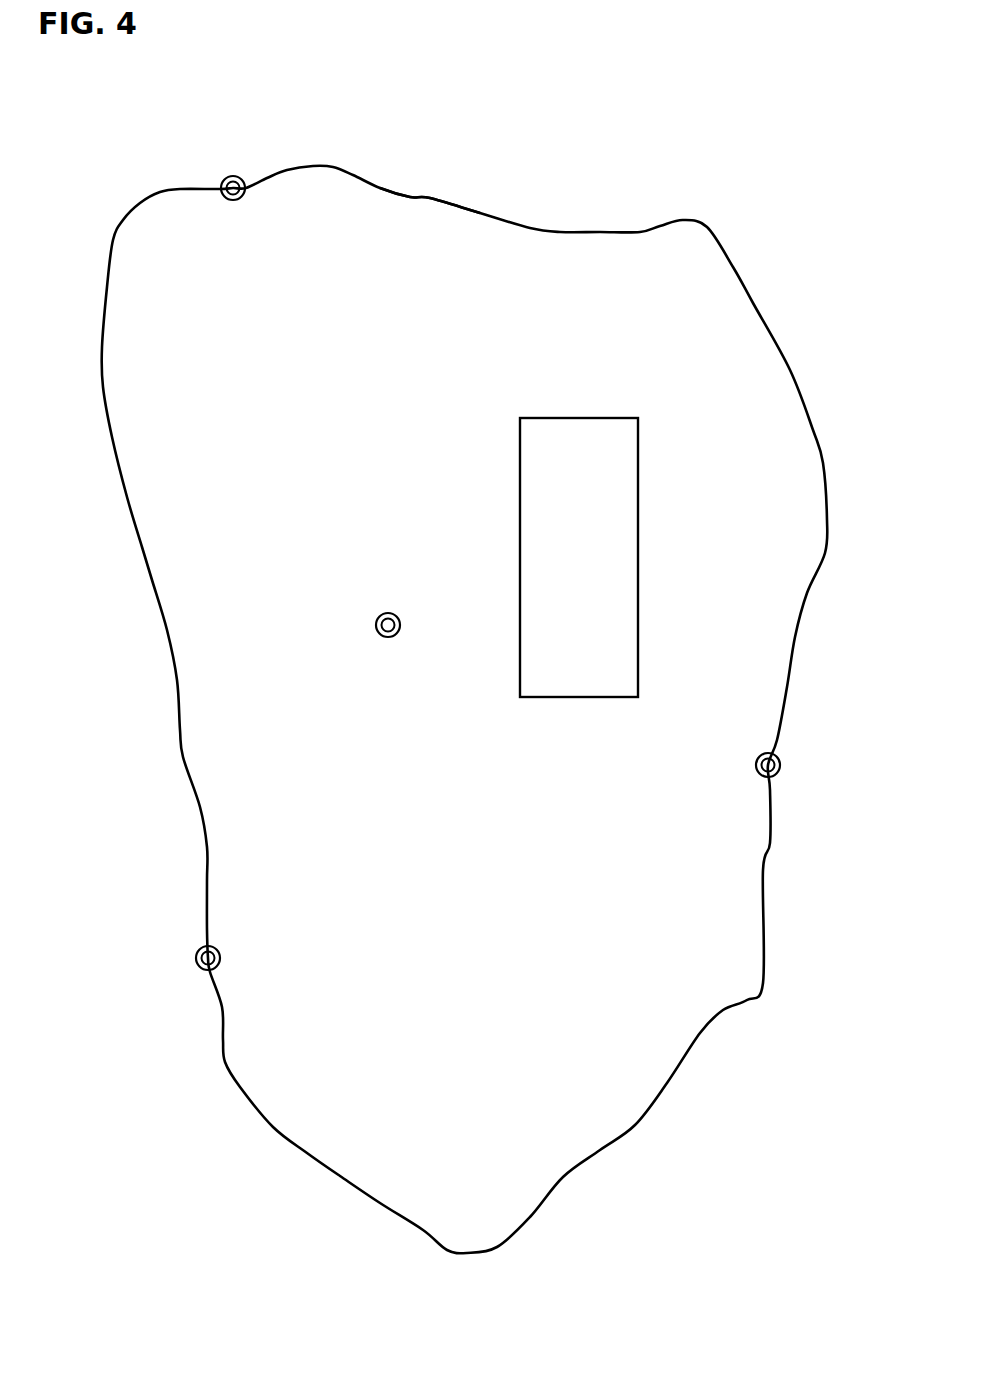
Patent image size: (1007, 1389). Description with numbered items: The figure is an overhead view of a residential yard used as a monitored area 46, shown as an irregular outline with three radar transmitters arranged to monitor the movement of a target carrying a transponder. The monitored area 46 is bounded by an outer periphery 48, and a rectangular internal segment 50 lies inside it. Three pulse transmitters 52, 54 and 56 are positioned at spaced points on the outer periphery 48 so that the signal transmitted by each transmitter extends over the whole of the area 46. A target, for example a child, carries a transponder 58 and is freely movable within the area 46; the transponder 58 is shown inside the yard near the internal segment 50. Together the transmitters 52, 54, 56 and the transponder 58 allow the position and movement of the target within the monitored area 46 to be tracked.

The monitored area 46 is at (812, 353).
The outer periphery 48 is at (430, 197).
The internal segment 50 is at (592, 565).
The pulse transmitter 52 is at (227, 180).
The pulse transmitter 54 is at (782, 767).
The pulse transmitter 56 is at (195, 960).
The transponder 58 is at (383, 617).